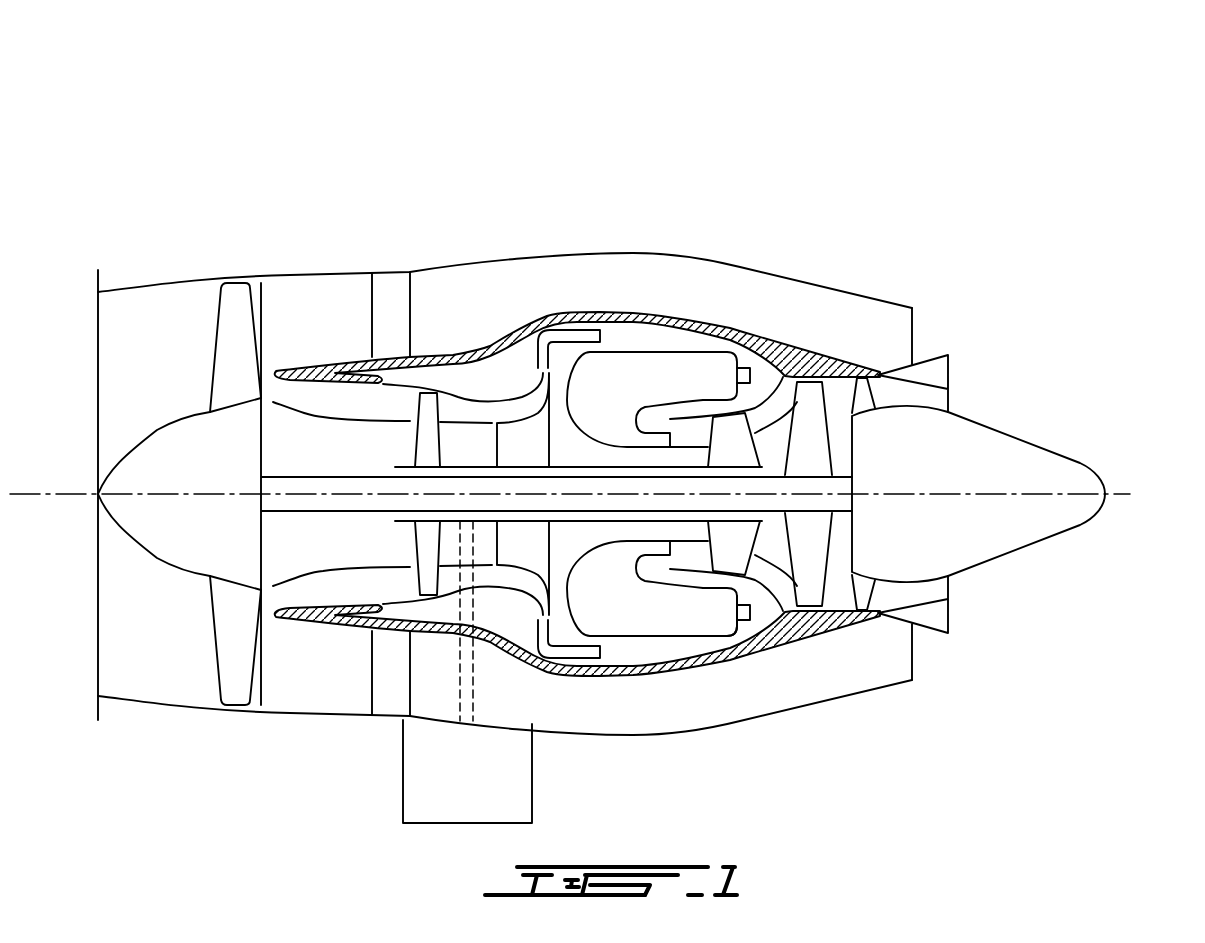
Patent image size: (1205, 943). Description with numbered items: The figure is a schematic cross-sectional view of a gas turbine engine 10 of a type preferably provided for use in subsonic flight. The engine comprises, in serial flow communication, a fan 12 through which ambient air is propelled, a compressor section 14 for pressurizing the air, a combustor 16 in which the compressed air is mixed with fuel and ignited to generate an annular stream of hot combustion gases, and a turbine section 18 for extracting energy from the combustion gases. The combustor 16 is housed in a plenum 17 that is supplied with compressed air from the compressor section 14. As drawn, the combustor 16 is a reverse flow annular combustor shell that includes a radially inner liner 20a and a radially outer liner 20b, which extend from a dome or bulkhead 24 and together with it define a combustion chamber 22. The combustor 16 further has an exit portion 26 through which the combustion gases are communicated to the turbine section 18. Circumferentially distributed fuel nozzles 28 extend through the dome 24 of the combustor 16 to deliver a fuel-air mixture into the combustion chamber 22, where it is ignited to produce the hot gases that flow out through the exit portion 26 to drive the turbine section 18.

The gas turbine engine 10 is at (912, 195).
The fan 12 is at (232, 625).
The compressor section 14 is at (457, 405).
The combustor 16 is at (625, 378).
The plenum 17 is at (687, 337).
The turbine section 18 is at (772, 553).
The radially inner liner 20a is at (704, 383).
The radially outer liner 20b is at (657, 350).
The combustion chamber 22 is at (732, 613).
The dome 24 is at (185, 238).
The exit portion 26 is at (680, 565).
The fuel nozzles 28 is at (741, 360).